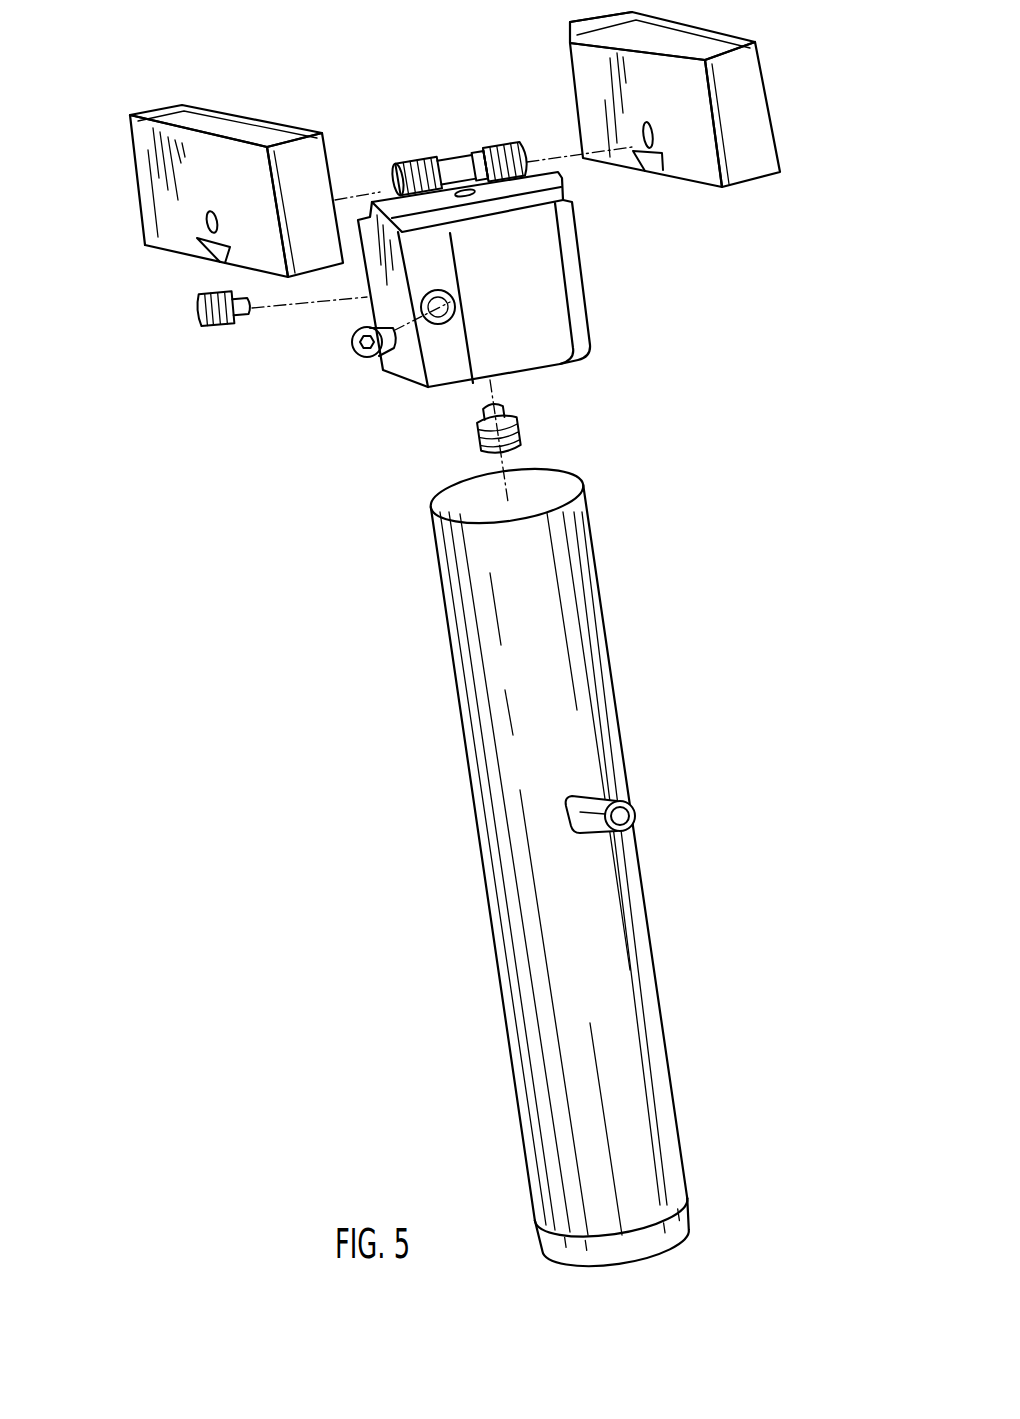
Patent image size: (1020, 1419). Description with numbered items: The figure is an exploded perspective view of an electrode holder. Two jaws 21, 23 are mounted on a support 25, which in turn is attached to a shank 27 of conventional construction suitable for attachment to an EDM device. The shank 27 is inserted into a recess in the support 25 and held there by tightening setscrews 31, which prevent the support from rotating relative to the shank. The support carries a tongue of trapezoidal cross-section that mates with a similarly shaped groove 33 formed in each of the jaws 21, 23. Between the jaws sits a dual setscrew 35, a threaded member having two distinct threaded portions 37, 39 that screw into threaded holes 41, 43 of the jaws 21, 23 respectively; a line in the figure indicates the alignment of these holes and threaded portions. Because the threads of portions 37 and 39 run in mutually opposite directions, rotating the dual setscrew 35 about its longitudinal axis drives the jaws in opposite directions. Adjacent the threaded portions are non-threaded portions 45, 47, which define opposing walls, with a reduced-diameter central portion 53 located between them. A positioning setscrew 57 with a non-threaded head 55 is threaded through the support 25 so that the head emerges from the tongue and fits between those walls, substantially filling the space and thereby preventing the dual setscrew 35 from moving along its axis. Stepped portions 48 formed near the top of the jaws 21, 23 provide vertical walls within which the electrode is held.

The jaw 21 is at (152, 190).
The jaw 23 is at (743, 135).
The support 25 is at (550, 340).
The shank 27 is at (572, 675).
The tightening setscrew 31 is at (200, 318).
The groove 33 is at (220, 255).
The dual setscrew 35 is at (425, 150).
The threaded portion 37 is at (402, 163).
The threaded portion 39 is at (500, 150).
The threaded hole 41 is at (215, 215).
The threaded hole 43 is at (646, 122).
The non-threaded portion 45 is at (443, 167).
The non-threaded portion 47 is at (477, 158).
The stepped portion 48 is at (570, 33).
The reduced-diameter central portion 53 is at (470, 197).
The non-threaded head 55 is at (505, 405).
The positioning setscrew 57 is at (518, 430).